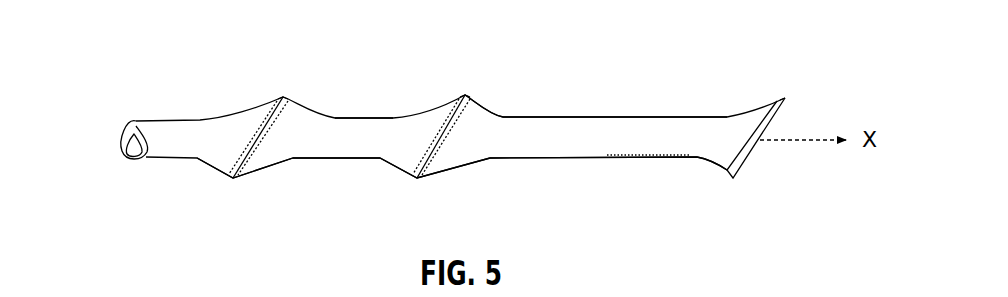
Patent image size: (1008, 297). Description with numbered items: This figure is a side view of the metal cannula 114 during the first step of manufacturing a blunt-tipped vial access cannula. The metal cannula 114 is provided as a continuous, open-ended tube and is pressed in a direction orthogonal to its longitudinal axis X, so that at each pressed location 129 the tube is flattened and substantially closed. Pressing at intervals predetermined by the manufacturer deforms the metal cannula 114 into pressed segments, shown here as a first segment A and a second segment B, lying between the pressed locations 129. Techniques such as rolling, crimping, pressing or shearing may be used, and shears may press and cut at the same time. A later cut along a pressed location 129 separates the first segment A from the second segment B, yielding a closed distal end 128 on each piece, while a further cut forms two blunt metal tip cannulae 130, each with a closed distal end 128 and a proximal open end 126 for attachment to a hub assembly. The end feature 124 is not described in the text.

The metal cannula 114 is at (372, 127).
The loop end 124 is at (121, 131).
The proximal open end 126 is at (478, 115).
The closed distal end 128 is at (750, 153).
The pressed location 129 is at (276, 81).
The blunt metal tip cannula 130 is at (229, 156).
The first segment A is at (608, 151).
The second segment B is at (370, 148).